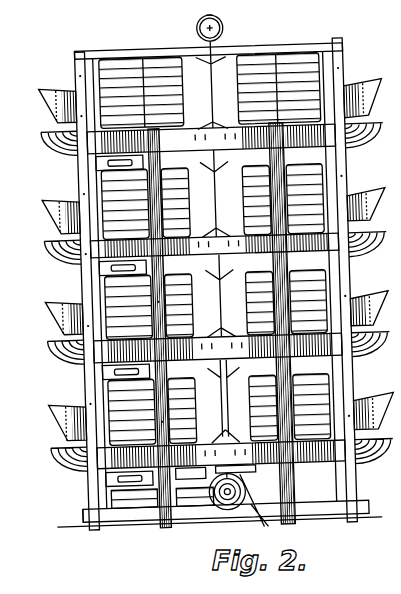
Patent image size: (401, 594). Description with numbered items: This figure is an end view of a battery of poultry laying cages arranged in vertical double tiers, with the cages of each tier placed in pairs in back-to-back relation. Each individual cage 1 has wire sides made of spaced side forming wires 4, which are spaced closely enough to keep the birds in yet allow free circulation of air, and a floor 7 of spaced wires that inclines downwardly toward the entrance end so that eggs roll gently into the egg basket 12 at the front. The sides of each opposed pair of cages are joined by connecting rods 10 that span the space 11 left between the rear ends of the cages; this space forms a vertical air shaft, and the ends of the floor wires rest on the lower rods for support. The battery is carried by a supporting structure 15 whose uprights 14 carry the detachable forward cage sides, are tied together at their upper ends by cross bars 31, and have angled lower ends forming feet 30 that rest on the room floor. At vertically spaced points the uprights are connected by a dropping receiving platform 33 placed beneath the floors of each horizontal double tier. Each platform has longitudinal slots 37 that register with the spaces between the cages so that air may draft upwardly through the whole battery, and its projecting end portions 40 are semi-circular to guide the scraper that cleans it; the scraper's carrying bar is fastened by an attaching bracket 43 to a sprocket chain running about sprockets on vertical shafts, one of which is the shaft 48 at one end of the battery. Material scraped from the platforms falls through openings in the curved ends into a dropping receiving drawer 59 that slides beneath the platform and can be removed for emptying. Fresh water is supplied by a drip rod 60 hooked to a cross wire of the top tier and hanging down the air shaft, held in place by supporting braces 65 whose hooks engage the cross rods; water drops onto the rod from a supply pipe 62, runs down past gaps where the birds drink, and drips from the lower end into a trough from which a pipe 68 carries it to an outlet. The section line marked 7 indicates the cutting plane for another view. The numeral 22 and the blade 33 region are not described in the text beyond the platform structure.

The individual cage 1 is at (137, 63).
The side forming wires 4 is at (47, 120).
The floor 7 is at (196, 22).
The connecting rods 10 is at (99, 54).
The space 11 is at (226, 380).
The egg basket 12 is at (56, 135).
The upright 14 is at (352, 73).
The supporting structure 15 is at (300, 515).
The inclined blade 22 is at (69, 95).
The feet 30 is at (333, 521).
The cross bars 31 is at (333, 47).
The dropping receiving platform 33 is at (70, 320).
The slots 37 is at (205, 370).
The end portions 40 is at (104, 148).
The attaching bracket 43 is at (243, 508).
The vertical shaft 48 is at (220, 200).
The dropping receiving drawer 59 is at (107, 156).
The drip rod 60 is at (218, 101).
The supply pipe 62 is at (205, 30).
The supporting braces 65 is at (212, 192).
The pipe 68 is at (125, 517).